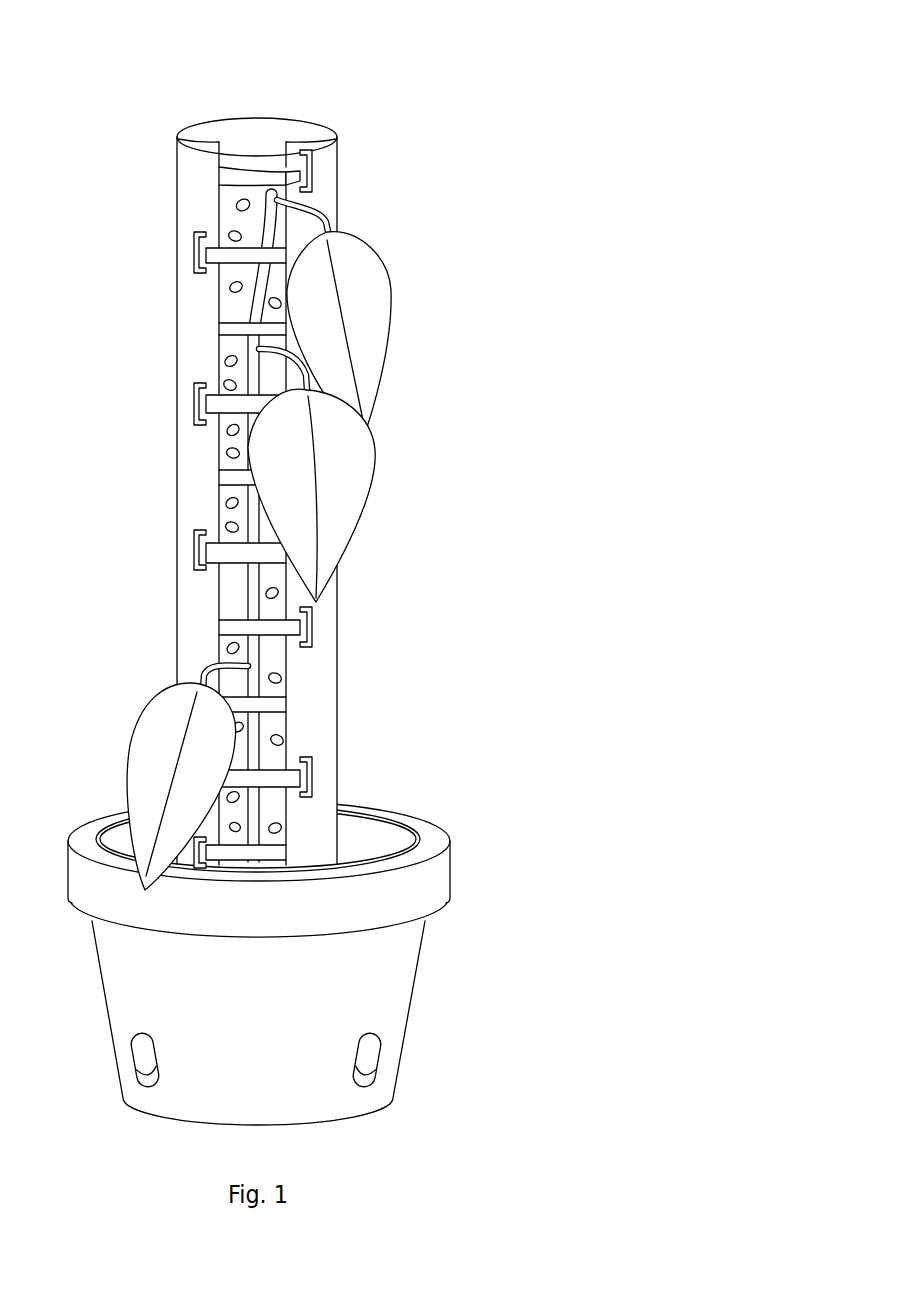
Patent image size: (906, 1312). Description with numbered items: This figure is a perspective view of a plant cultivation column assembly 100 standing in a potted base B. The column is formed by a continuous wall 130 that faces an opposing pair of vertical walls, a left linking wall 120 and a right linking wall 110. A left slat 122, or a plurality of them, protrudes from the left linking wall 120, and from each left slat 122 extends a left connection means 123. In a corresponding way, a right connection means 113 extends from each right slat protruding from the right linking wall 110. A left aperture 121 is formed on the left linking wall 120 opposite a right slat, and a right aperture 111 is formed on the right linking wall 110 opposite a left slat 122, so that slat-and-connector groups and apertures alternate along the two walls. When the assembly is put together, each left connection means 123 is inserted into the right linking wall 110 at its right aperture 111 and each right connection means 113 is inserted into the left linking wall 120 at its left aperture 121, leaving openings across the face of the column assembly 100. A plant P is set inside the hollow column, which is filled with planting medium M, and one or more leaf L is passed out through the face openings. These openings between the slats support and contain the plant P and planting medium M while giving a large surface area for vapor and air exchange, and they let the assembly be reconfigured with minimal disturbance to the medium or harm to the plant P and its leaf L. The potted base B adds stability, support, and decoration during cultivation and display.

The plant cultivation column assembly 100 is at (305, 566).
The right linking wall 110 is at (325, 204).
The right aperture 111 is at (299, 170).
The right connection means 113 is at (197, 250).
The left linking wall 120 is at (192, 183).
The left aperture 121 is at (200, 268).
The left slat 122 is at (240, 177).
The left connection means 123 is at (290, 175).
The continuous wall 130 is at (240, 135).
The leaf L is at (376, 335).
The plant P is at (255, 665).
The planting medium M is at (282, 678).
The potted base B is at (257, 1070).